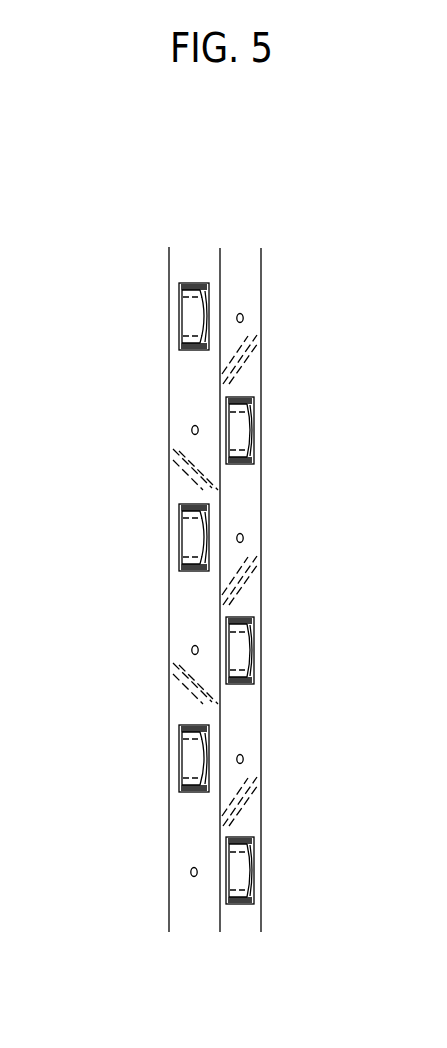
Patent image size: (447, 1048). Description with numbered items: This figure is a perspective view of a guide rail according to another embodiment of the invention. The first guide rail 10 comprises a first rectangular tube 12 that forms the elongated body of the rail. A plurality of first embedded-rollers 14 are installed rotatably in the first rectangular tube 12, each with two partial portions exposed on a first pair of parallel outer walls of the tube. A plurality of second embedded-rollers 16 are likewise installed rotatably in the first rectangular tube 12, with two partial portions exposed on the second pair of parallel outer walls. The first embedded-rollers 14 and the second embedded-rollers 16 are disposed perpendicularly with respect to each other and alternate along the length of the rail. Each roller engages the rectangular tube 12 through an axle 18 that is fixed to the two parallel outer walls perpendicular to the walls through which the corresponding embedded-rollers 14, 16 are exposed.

The first guide rail 10 is at (283, 270).
The first rectangular tube 12 is at (170, 258).
The first embedded-rollers 14 is at (185, 318).
The second embedded-rollers 16 is at (248, 430).
The axle 18 is at (244, 317).